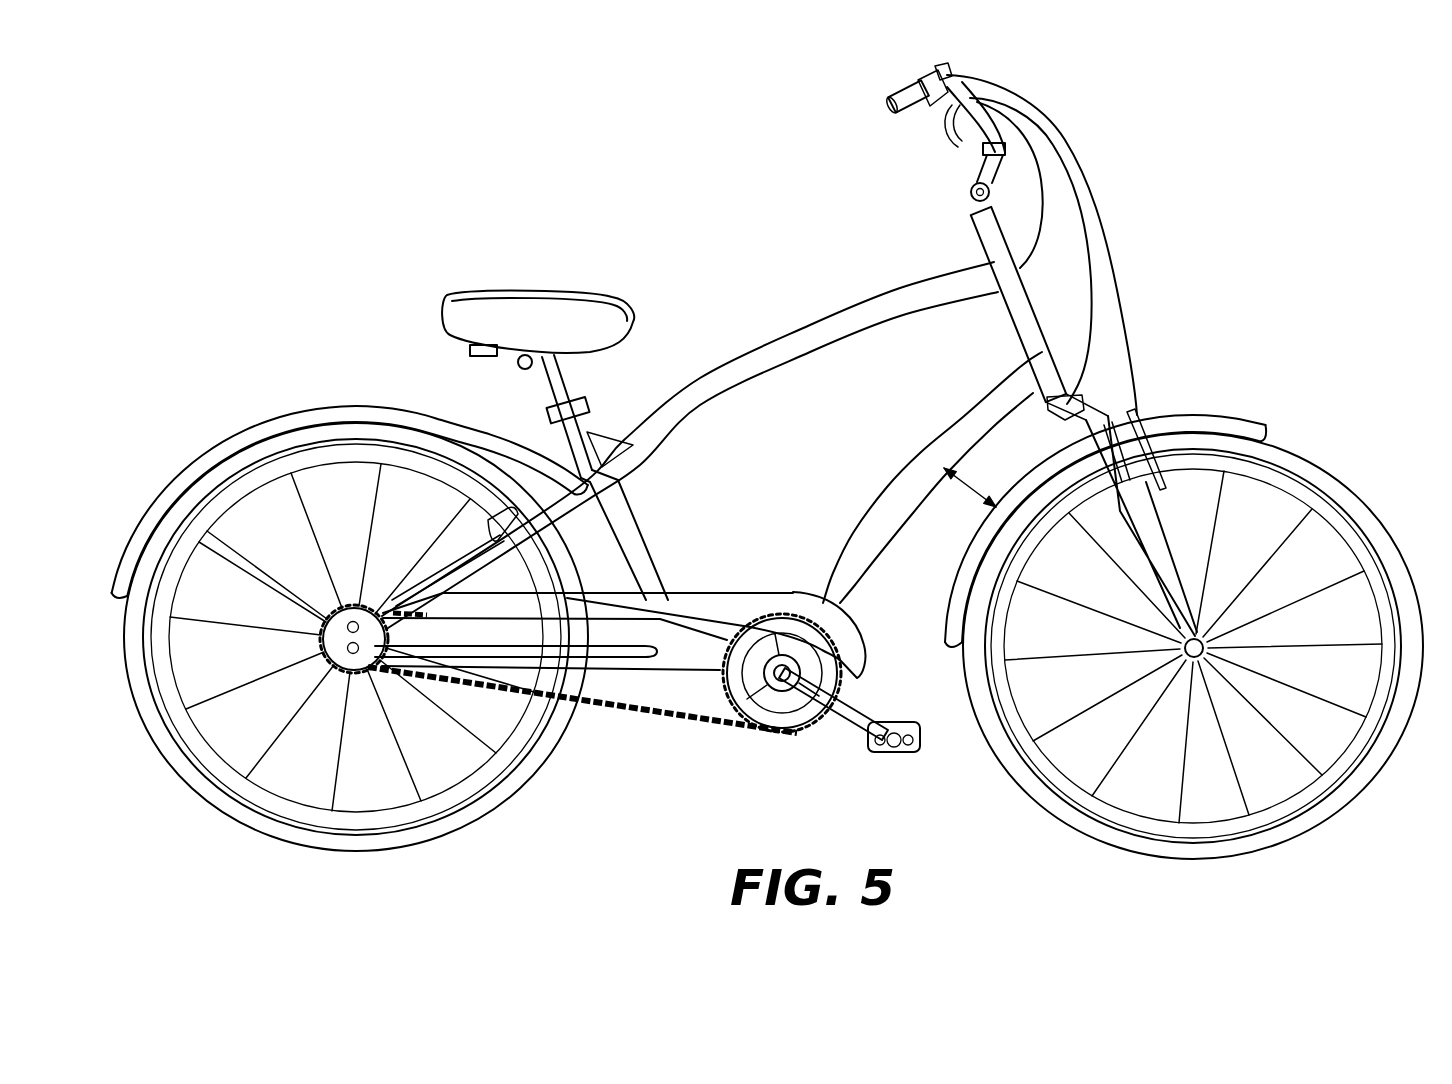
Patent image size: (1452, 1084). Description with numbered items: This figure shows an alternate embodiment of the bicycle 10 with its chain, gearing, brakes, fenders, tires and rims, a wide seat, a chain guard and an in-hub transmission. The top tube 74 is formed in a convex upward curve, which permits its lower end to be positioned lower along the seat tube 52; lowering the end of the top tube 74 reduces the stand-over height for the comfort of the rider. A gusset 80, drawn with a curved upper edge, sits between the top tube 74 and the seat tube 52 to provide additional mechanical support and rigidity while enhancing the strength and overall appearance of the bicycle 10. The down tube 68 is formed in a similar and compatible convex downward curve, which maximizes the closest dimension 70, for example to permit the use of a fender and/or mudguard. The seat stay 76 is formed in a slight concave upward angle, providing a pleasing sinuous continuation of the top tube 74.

The bicycle 10 is at (1258, 260).
The seat tube 52 is at (650, 553).
The down tube 68 is at (900, 450).
The closest dimension 70 is at (966, 490).
The top tube 74 is at (840, 305).
The seat stay 76 is at (436, 568).
The gusset 80 is at (625, 425).